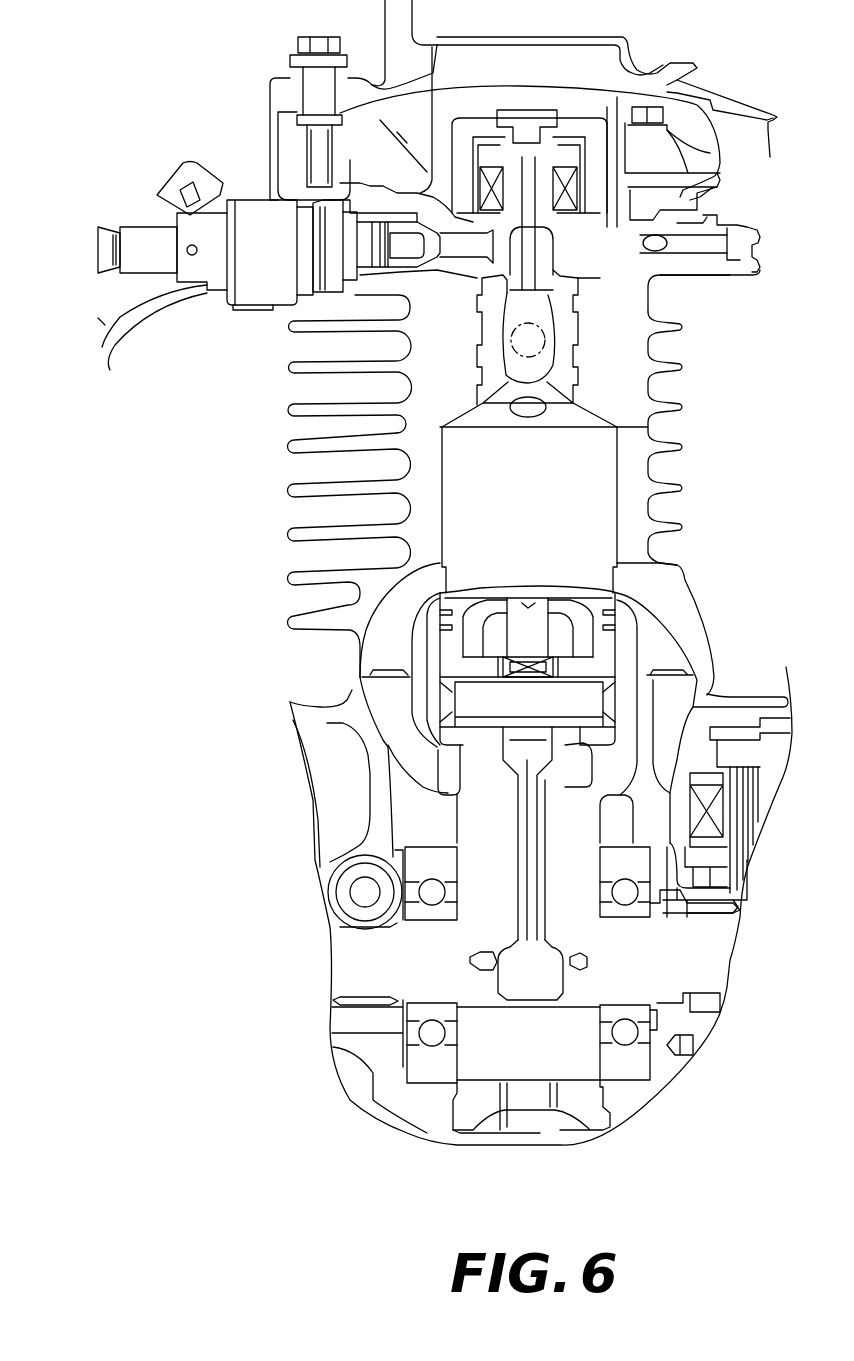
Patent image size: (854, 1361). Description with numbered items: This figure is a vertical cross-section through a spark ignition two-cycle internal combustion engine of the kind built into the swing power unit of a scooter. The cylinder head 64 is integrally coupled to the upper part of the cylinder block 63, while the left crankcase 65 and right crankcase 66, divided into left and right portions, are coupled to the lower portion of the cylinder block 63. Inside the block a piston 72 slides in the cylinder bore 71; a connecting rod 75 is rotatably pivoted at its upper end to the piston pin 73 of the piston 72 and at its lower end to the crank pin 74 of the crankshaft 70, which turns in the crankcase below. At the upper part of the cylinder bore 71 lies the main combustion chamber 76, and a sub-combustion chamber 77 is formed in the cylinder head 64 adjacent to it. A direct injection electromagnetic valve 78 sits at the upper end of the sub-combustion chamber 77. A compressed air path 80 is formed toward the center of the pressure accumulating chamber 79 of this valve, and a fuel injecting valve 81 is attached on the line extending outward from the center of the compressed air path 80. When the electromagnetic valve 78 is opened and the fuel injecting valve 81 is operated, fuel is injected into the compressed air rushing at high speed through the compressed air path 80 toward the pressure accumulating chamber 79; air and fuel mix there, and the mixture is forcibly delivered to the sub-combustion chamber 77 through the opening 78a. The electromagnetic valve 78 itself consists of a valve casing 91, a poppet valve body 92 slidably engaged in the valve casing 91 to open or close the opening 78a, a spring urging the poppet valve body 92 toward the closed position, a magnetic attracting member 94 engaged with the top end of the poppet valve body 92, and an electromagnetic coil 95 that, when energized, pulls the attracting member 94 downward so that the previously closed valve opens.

The cylinder block 63 is at (640, 518).
The cylinder head 64 is at (627, 343).
The left crankcase 65 is at (340, 707).
The right crankcase 66 is at (707, 695).
The crankshaft 70 is at (350, 957).
The cylinder bore 71 is at (442, 483).
The piston 72 is at (500, 590).
The piston pin 73 is at (523, 656).
The crank pin 74 is at (512, 1048).
The connecting rod 75 is at (527, 837).
The main combustion chamber 76 is at (562, 473).
The sub-combustion chamber 77 is at (567, 255).
The direct injection electromagnetic valve 78 is at (571, 98).
The opening 78a is at (540, 290).
The pressure accumulating chamber 79 is at (533, 257).
The compressed air path 80 is at (455, 250).
The fuel injecting valve 81 is at (250, 213).
The valve casing 91 is at (643, 247).
The poppet valve body 92 is at (527, 250).
The magnetic attracting member 94 is at (517, 157).
The electromagnetic coil 95 is at (548, 187).